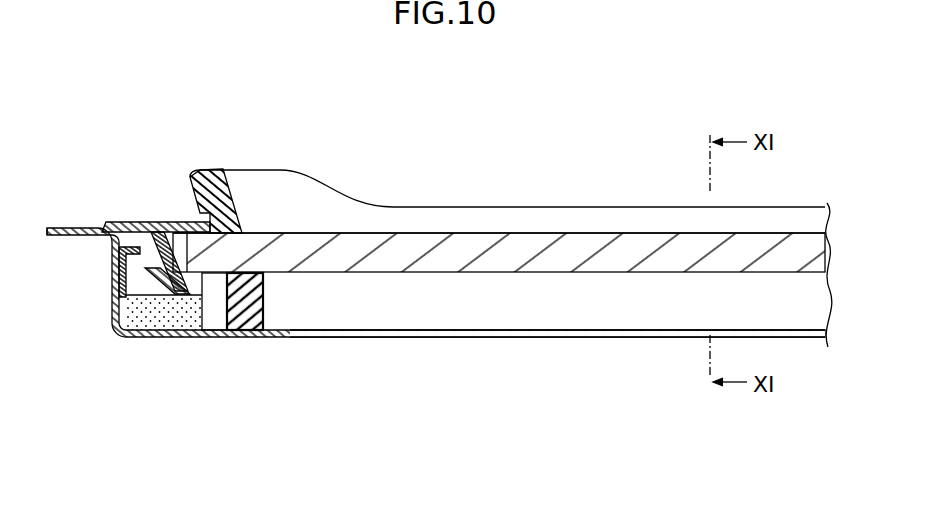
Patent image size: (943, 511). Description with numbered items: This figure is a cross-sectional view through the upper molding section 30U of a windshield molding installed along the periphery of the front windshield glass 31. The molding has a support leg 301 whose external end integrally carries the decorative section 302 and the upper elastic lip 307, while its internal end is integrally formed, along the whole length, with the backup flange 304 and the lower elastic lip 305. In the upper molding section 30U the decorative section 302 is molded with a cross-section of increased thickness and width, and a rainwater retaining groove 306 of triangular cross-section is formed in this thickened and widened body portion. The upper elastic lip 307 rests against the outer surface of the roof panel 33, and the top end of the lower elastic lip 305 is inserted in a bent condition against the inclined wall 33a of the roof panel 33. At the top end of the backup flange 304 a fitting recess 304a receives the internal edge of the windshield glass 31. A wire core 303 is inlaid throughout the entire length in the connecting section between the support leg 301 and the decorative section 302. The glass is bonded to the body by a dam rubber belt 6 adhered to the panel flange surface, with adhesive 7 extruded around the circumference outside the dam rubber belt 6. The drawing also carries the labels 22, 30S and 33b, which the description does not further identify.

The dam rubber belt 6 is at (265, 297).
The adhesive 7 is at (178, 312).
The upper cover 22 is at (785, 210).
The upper molding section 30U is at (499, 154).
The shell side portion 30S is at (648, 193).
The front windshield glass 31 is at (552, 244).
The roof panel 33 is at (53, 250).
The inclined wall 33a is at (115, 273).
The frame bottom wall 33b is at (245, 339).
The support leg 301 is at (117, 314).
The decorative section 302 is at (250, 207).
The wire core 303 is at (157, 222).
The backup flange 304 is at (168, 296).
The fitting recess 304a is at (206, 302).
The lower elastic lip 305 is at (121, 274).
The rainwater retaining groove 306 is at (191, 181).
The upper elastic lip 307 is at (115, 222).